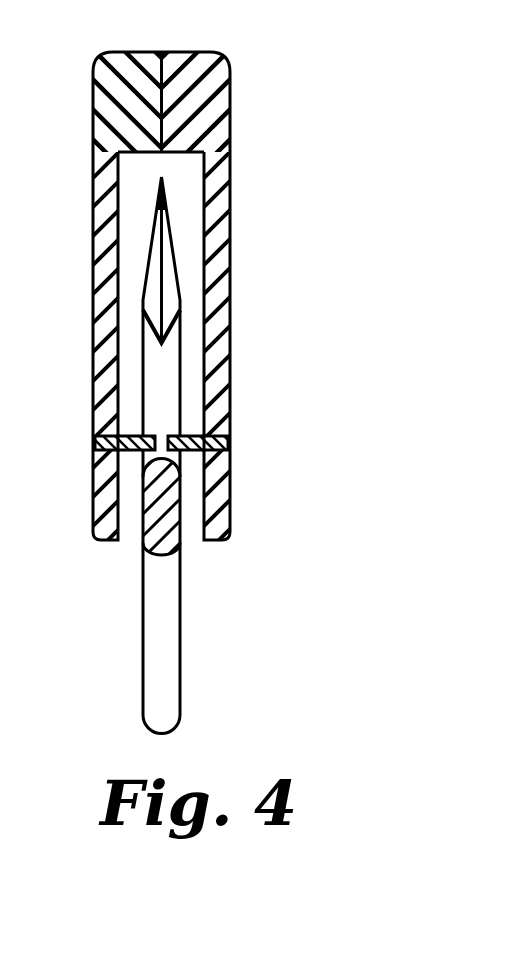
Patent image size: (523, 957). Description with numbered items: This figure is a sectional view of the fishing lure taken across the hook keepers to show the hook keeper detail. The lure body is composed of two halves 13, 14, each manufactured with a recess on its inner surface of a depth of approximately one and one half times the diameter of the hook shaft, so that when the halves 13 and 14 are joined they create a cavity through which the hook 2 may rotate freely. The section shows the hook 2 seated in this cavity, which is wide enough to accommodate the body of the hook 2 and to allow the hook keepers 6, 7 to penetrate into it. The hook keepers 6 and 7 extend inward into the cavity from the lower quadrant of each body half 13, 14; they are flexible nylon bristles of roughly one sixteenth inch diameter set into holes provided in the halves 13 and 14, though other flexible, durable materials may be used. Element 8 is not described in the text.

The hook 2 is at (182, 608).
The hook keeper 6 is at (228, 445).
The hook keeper 7 is at (95, 445).
The cap 8 is at (218, 100).
The body half 13 is at (230, 272).
The body half 14 is at (93, 272).